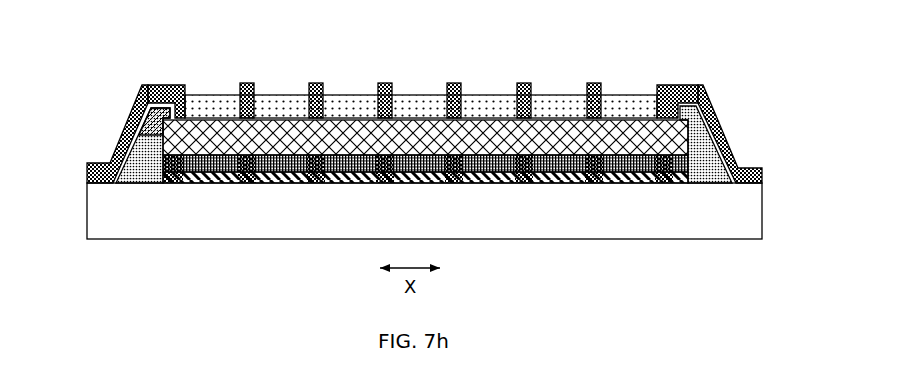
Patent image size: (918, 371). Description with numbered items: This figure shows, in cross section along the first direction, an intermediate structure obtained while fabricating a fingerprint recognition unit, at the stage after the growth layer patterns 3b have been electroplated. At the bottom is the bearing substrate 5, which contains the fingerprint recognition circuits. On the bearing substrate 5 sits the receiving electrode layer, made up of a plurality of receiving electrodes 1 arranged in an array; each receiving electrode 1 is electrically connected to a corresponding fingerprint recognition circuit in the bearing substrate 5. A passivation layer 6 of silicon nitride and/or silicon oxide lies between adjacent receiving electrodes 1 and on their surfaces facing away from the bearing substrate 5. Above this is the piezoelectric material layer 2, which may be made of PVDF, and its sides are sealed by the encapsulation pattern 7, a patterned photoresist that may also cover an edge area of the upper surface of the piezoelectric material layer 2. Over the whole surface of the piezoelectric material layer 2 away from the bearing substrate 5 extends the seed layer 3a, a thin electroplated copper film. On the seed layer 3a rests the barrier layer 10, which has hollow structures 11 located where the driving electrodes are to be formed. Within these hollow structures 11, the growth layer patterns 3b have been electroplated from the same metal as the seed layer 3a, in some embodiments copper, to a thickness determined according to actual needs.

The receiving electrode 1 is at (188, 176).
The piezoelectric material layer 2 is at (190, 140).
The seed layer 3a is at (140, 93).
The growth layer pattern 3b is at (292, 102).
The bearing substrate 5 is at (117, 210).
The passivation layer 6 is at (670, 163).
The encapsulation pattern 7 is at (700, 141).
The barrier layer 10 is at (155, 83).
The hollow structure 11 is at (217, 78).